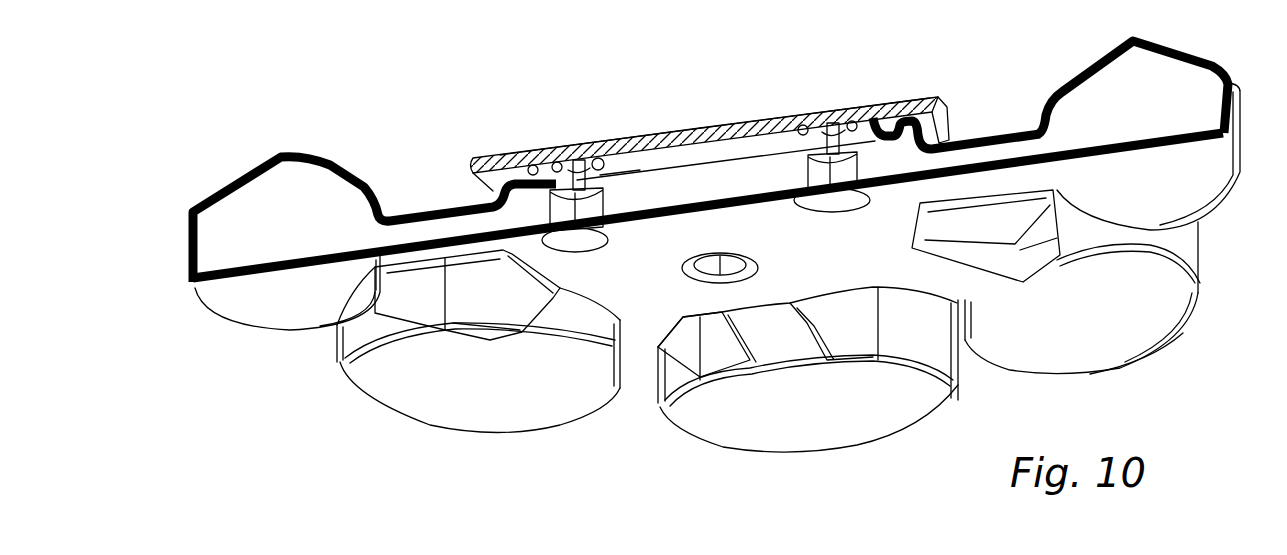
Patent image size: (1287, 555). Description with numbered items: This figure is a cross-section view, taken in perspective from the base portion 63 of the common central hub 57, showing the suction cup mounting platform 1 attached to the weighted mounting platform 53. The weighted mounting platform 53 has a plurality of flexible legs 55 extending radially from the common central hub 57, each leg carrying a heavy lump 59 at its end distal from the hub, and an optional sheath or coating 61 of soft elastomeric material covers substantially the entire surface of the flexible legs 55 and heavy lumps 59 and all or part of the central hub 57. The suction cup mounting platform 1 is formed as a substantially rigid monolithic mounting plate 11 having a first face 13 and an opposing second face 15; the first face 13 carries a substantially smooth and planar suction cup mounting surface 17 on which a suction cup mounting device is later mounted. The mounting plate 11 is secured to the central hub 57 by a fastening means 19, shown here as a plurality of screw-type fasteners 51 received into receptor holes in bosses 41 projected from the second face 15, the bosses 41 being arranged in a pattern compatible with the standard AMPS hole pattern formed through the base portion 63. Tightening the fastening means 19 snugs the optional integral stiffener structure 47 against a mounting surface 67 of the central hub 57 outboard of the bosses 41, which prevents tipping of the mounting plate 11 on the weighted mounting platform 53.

The suction cup mounting platform 1 is at (477, 155).
The monolithic mounting plate 11 is at (950, 118).
The first face 13 is at (867, 100).
The second face 15 is at (657, 133).
The suction cup mounting surface 17 is at (717, 125).
The fastening means 19 is at (605, 228).
The bosses 41 is at (557, 162).
The integral stiffener structure 47 is at (533, 163).
The screw-type fasteners 51 is at (572, 158).
The weighted mounting platform 53 is at (1155, 347).
The flexible legs 55 is at (447, 227).
The common central hub 57 is at (697, 192).
The heavy lumps 59 is at (272, 223).
The sheath or coating 61 is at (1160, 42).
The base portion 63 is at (702, 243).
The mounting surface 67 is at (632, 172).